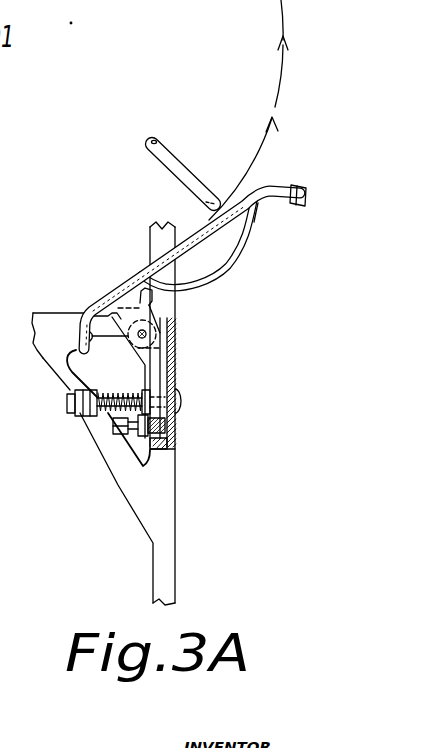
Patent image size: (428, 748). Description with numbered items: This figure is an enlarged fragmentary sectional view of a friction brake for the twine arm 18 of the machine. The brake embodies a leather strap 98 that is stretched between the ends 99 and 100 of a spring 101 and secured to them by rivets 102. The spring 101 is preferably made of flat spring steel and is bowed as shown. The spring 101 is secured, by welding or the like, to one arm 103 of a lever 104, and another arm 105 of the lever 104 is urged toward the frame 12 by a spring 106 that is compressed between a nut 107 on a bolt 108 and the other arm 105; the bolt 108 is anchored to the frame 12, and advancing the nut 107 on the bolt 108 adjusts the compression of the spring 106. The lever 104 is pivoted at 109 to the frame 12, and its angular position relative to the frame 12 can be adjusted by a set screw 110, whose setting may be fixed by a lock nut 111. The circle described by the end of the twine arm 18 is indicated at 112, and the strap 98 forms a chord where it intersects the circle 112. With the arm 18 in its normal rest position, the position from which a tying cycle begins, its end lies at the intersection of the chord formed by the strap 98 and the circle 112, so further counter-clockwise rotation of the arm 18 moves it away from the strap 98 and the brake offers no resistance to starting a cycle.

The frame 12 is at (176, 497).
The twine arm 18 is at (189, 172).
The leather strap 98 is at (159, 256).
The end of spring 99 is at (276, 200).
The end of spring 100 is at (87, 349).
The spring 101 is at (243, 264).
The rivets 102 is at (290, 186).
The arm of lever 103 is at (150, 311).
The lever 104 is at (153, 369).
The other arm of lever 105 is at (155, 417).
The spring 106 is at (99, 418).
The nut 107 is at (78, 413).
The bolt 108 is at (183, 397).
The pivot 109 is at (148, 334).
The set screw 110 is at (124, 433).
The lock nut 111 is at (140, 437).
The circle 112 is at (279, 98).